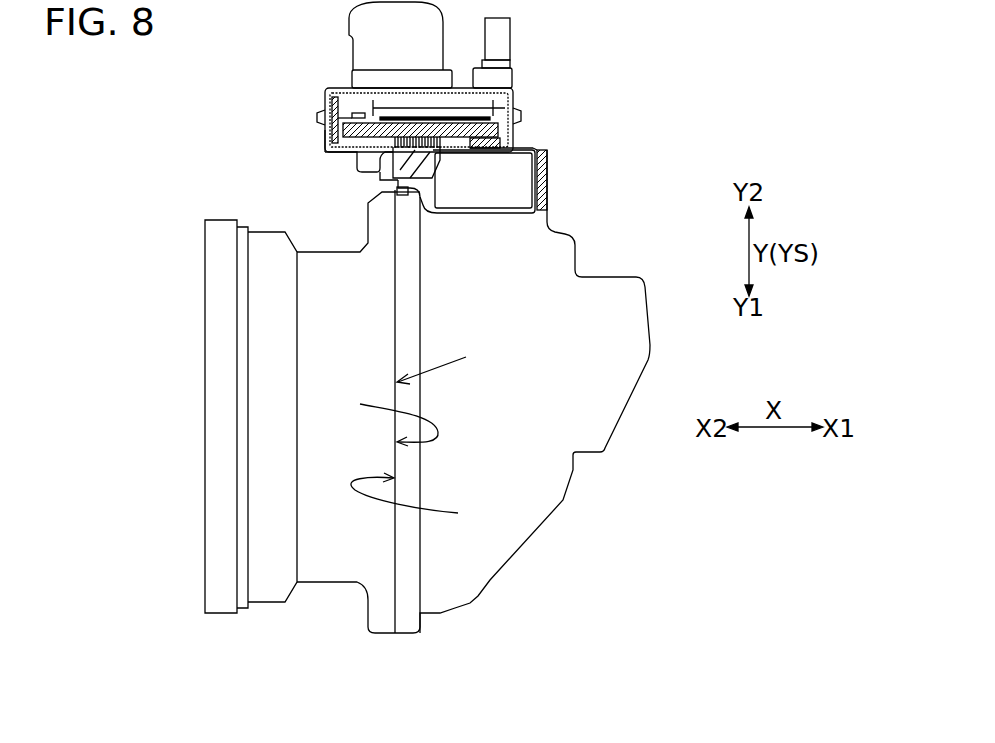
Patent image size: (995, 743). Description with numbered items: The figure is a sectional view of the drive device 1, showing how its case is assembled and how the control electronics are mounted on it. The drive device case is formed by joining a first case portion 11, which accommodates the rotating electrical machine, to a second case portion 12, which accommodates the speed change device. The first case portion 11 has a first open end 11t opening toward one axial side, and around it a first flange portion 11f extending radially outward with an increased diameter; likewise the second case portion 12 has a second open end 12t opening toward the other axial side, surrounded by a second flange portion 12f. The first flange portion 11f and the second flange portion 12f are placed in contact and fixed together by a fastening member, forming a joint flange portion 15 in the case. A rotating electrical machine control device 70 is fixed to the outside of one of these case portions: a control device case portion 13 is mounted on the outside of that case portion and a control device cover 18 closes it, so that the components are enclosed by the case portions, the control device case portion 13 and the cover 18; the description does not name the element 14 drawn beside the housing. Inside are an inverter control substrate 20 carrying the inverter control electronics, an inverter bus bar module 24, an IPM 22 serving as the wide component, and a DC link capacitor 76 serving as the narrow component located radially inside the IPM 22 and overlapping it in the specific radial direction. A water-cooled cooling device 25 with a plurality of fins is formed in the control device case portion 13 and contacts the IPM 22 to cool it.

The drive device 1 is at (165, 160).
The rotating electrical machine control device 70 is at (278, 115).
The control device cover 18 is at (332, 90).
The inverter bus bar module 24 is at (323, 102).
The control device case portion 13 is at (323, 138).
The inverter control substrate 20 is at (477, 107).
The housing case 14 is at (519, 108).
The IPM 22 is at (498, 131).
The DC link capacitor 76 is at (518, 183).
The cooling device 25 is at (388, 173).
The first case portion 11 is at (217, 391).
The first flange portion 11f is at (378, 323).
The first open end 11t is at (380, 420).
The second case portion 12 is at (548, 490).
The second flange portion 12f is at (422, 298).
The second open end 12t is at (423, 499).
The joint flange portion 15 is at (447, 362).